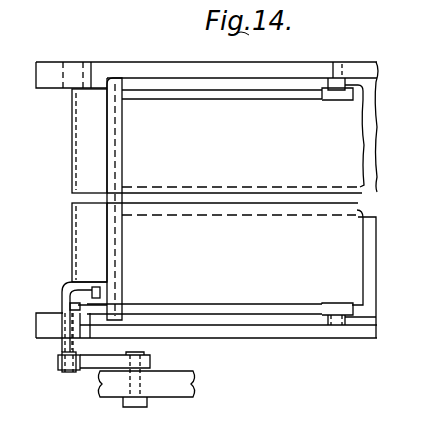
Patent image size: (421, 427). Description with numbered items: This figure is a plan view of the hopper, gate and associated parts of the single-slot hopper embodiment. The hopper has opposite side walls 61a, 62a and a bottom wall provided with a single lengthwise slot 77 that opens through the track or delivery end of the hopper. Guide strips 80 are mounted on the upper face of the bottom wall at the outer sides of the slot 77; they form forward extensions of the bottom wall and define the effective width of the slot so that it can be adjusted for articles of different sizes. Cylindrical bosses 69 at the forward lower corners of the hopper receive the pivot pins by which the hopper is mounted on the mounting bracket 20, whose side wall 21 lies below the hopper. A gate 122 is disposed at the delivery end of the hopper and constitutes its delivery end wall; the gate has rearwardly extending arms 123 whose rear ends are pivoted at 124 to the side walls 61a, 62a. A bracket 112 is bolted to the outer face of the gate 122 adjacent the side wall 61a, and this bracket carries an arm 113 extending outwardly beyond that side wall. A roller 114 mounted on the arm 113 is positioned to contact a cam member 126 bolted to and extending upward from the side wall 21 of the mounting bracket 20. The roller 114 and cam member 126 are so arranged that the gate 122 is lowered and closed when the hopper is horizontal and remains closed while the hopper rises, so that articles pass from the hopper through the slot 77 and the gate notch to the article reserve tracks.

The mounting bracket 20 is at (197, 392).
The side wall 21 is at (150, 400).
The side wall 61a is at (286, 338).
The side wall 62a is at (159, 70).
The cylindrical boss 69 is at (47, 68).
The slot 77 is at (222, 188).
The guide strip 80 is at (80, 140).
The bracket 112 is at (107, 284).
The arm 113 is at (62, 306).
The roller 114 is at (63, 373).
The gate 122 is at (118, 153).
The arm 123 is at (218, 96).
The pivot 124 is at (348, 60).
The cam member 126 is at (92, 371).